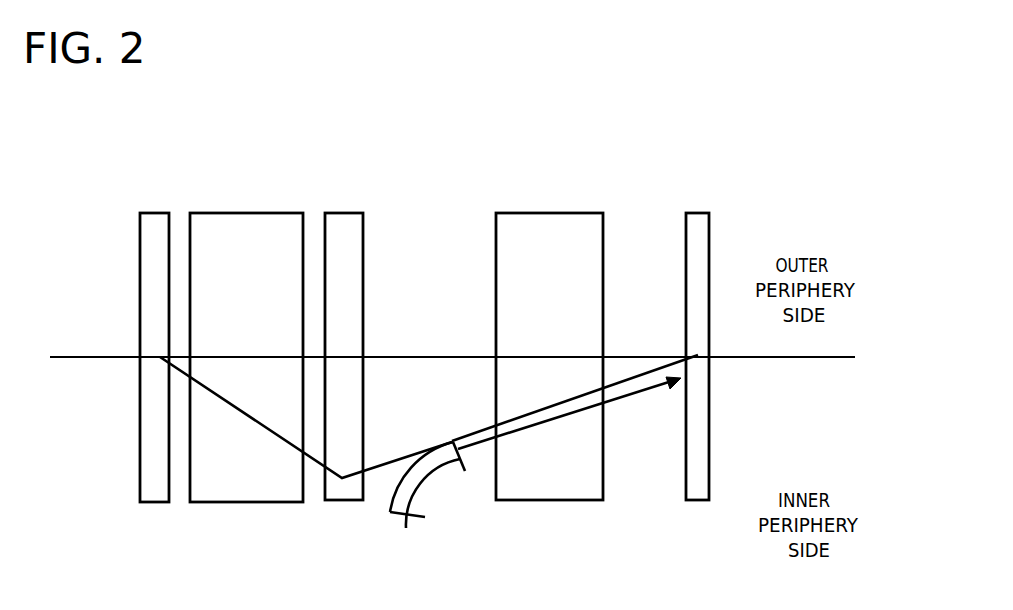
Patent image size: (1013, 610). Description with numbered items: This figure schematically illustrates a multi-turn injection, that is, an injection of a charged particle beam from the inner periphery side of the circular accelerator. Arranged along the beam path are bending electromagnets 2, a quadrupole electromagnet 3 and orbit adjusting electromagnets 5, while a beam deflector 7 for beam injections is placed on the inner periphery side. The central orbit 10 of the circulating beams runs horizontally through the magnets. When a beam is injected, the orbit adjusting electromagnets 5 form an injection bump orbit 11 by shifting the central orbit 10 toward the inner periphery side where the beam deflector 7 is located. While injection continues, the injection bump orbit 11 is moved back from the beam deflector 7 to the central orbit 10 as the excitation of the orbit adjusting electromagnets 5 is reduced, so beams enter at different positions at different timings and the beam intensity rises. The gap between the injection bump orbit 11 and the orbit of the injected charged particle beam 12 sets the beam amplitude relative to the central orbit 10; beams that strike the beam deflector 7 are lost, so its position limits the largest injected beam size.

The bending electromagnet 2 is at (253, 213).
The quadrupole electromagnet 3 is at (350, 213).
The orbit adjusting electromagnet 5 is at (157, 213).
The beam deflector for beam injections 7 is at (437, 488).
The central orbit 10 is at (422, 356).
The injection bump orbit 11 is at (410, 454).
The orbit of the injected charged particle beam 12 is at (615, 403).